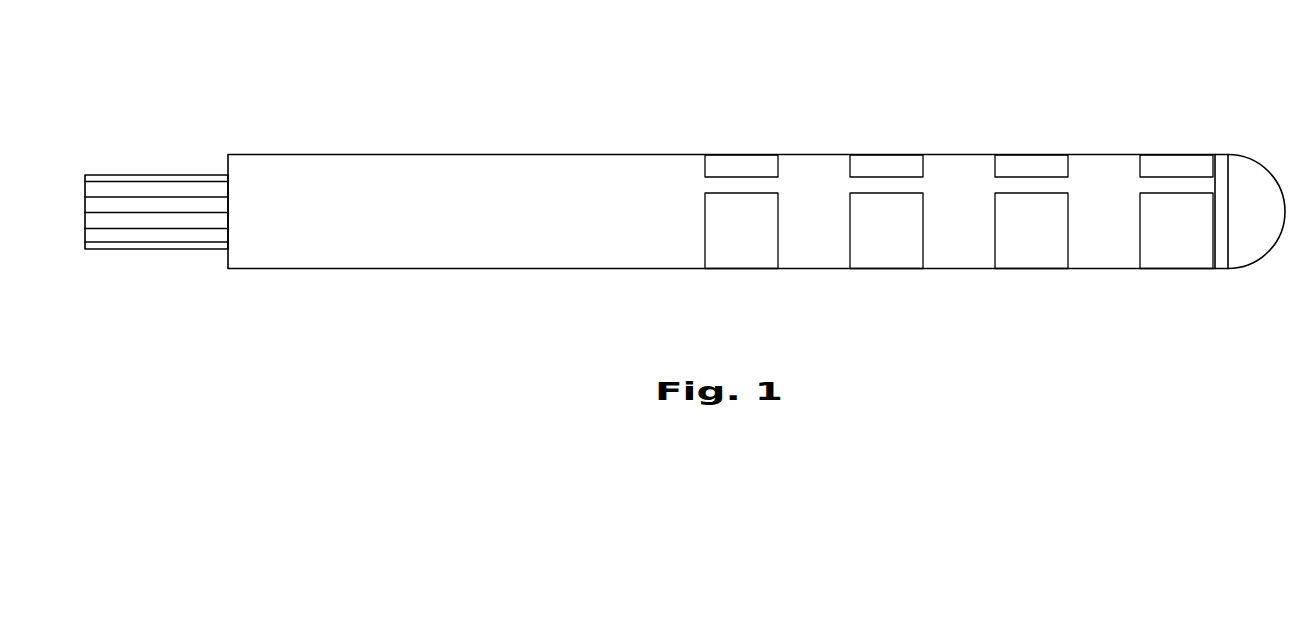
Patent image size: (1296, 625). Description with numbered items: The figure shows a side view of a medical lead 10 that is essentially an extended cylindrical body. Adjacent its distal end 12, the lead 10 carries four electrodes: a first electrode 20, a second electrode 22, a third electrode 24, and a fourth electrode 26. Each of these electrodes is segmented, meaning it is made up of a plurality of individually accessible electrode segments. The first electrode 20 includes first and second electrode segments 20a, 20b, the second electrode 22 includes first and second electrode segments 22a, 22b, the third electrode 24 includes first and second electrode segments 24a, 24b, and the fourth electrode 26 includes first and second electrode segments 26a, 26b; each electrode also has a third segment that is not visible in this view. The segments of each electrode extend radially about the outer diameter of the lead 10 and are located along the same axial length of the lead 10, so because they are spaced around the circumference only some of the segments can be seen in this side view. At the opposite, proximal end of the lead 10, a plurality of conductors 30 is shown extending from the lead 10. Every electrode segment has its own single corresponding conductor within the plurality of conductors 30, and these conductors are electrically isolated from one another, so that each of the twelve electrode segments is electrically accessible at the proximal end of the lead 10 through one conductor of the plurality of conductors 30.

The medical lead 10 is at (668, 92).
The distal end 12 is at (1248, 252).
The first electrode 20 is at (1179, 112).
The first electrode segment 20a is at (1161, 165).
The second electrode segment 20b is at (1167, 260).
The second electrode 22 is at (1039, 112).
The first electrode segment 22a is at (1016, 165).
The second electrode segment 22b is at (1022, 260).
The third electrode 24 is at (889, 112).
The first electrode segment 24a is at (870, 165).
The second electrode segment 24b is at (877, 260).
The fourth electrode 26 is at (741, 112).
The first electrode segment 26a is at (723, 165).
The second electrode segment 26b is at (732, 260).
The plurality of conductors 30 is at (152, 172).